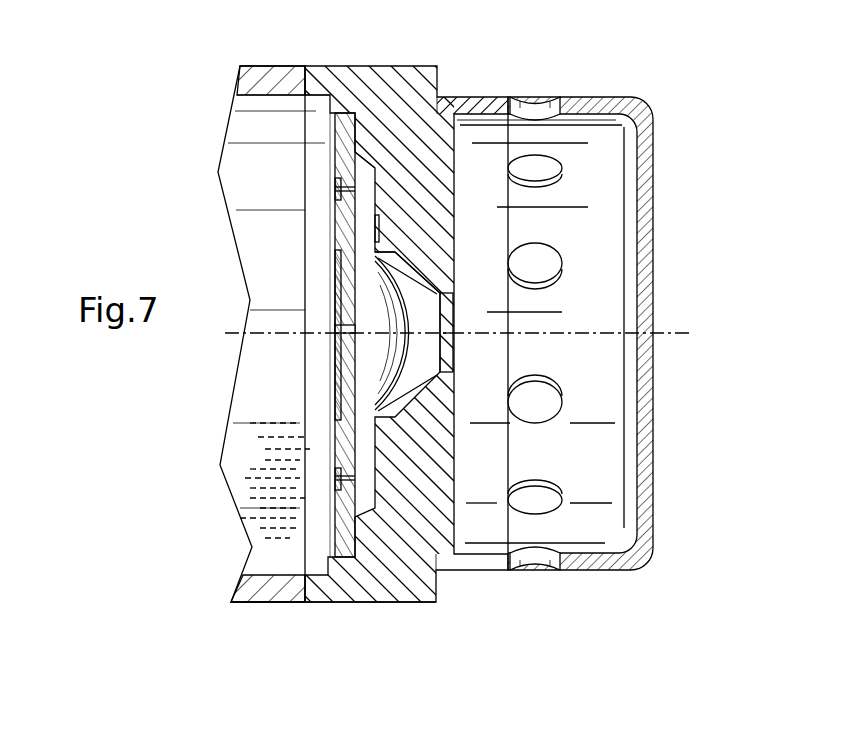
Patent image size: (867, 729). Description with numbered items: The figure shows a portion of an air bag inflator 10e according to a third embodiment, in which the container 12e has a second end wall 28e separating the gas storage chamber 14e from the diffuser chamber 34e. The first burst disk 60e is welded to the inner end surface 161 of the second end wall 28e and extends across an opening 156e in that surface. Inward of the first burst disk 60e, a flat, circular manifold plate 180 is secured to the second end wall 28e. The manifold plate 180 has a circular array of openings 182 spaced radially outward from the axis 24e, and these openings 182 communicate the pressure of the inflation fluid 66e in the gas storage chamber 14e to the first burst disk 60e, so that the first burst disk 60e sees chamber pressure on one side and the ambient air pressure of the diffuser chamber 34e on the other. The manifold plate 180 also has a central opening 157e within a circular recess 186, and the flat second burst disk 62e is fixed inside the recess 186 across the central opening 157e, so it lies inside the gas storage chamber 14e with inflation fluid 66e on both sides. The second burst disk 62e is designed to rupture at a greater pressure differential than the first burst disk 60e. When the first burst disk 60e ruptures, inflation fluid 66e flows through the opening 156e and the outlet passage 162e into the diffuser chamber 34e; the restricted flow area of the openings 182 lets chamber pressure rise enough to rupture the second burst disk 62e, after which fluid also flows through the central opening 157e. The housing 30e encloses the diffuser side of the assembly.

The inflator 10e is at (180, 601).
The container 12e is at (270, 60).
The gas storage chamber 14e is at (270, 553).
The axis 24e is at (684, 340).
The second end wall 28e is at (402, 603).
The housing 30e is at (649, 118).
The diffuser chamber 34e is at (603, 468).
The first burst disk 60e is at (424, 347).
The second burst disk 62e is at (335, 277).
The inflation fluid 66e is at (280, 464).
The opening 156e is at (372, 317).
The central opening 157e is at (347, 342).
The inner end surface 161 is at (352, 170).
The outlet passage 162e is at (413, 246).
The manifold plate 180 is at (322, 437).
The openings 182 is at (343, 196).
The circular recess 186 is at (337, 255).